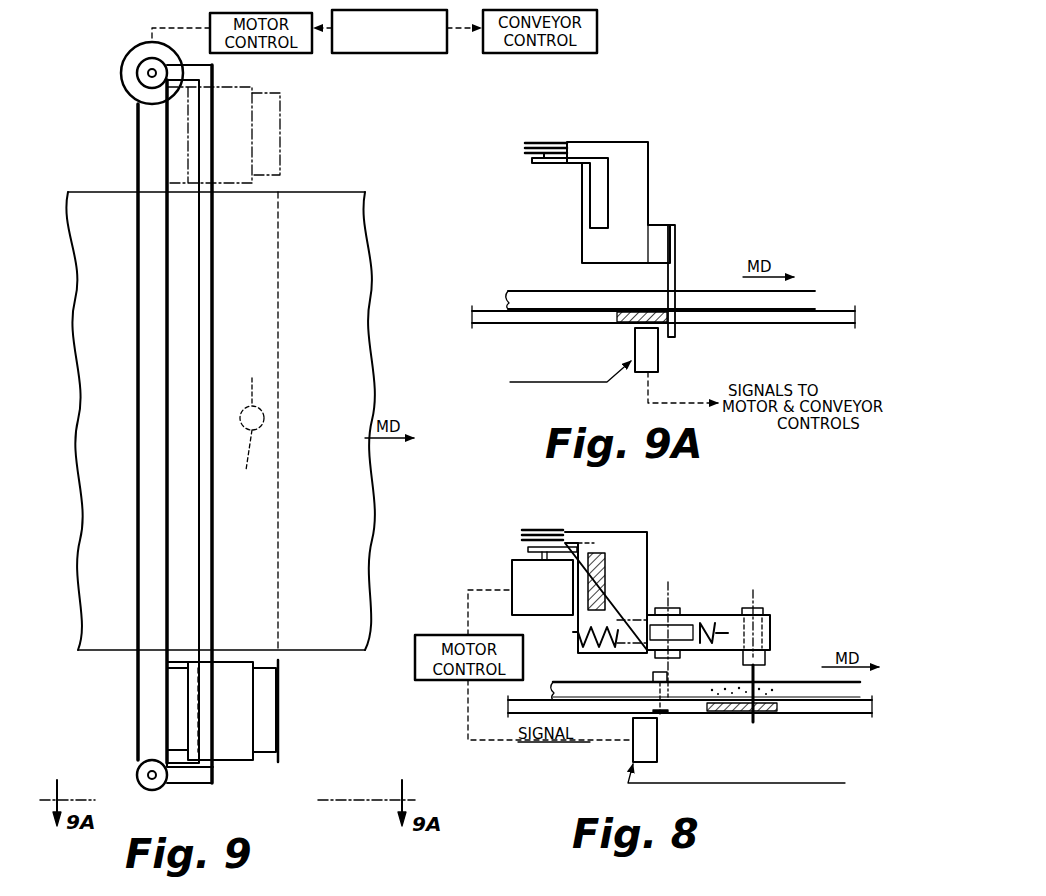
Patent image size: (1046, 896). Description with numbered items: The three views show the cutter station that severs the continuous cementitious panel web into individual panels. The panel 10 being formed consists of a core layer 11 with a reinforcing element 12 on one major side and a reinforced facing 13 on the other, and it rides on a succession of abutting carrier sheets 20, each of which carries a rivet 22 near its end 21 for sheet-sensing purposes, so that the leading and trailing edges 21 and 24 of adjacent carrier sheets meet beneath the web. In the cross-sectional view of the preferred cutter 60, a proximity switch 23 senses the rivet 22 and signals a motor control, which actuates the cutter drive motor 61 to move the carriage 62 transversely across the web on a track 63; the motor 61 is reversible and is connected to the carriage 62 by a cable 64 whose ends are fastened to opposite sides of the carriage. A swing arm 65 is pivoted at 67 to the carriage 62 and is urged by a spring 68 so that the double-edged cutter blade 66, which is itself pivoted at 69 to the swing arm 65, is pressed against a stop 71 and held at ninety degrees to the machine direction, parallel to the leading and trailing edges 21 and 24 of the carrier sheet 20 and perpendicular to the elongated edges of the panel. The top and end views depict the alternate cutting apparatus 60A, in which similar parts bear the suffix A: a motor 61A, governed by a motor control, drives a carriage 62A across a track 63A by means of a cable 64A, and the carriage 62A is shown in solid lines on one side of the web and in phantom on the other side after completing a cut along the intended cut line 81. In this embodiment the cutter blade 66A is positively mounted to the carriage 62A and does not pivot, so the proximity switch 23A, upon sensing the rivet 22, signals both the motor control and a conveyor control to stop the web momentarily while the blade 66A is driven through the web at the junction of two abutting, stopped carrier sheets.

In FIG. 9A, the panel 10 is at (508, 294).
In FIG. 8, the panel 10 is at (548, 688).
In FIG. 9A, the core layer 11 is at (798, 316).
In FIG. 8, the core layer 11 is at (853, 690).
In FIG. 9A, the reinforcing element 12 is at (818, 325).
In FIG. 8, the reinforcing element 12 is at (830, 702).
In FIG. 9A, the reinforced facing 13 is at (818, 292).
In FIG. 8, the reinforced facing 13 is at (808, 681).
In FIG. 9A, the carrier sheet 20 is at (476, 325).
In FIG. 8, the carrier sheet 20 is at (512, 708).
In FIG. 9A, the end of carrier sheet 21 is at (661, 336).
In FIG. 8, the end of carrier sheet 21 is at (750, 722).
In FIG. 9, the rivet 22 is at (248, 483).
In FIG. 9A, the rivet 22 is at (660, 310).
In FIG. 8, the rivet 22 is at (721, 714).
In FIG. 8, the proximity switch 23 is at (637, 750).
In FIG. 9, the proximity switch 23A is at (392, 54).
In FIG. 9A, the proximity switch 23A is at (640, 372).
In FIG. 9A, the trailing edge 24 is at (683, 325).
In FIG. 8, the trailing edge 24 is at (761, 714).
In FIG. 8, the cutter 60 is at (739, 536).
In FIG. 9, the cutting apparatus 60A is at (243, 790).
In FIG. 9A, the cutting apparatus 60A is at (737, 139).
In FIG. 8, the cutter drive motor 61 is at (512, 578).
In FIG. 9, the motor 61A is at (130, 78).
In FIG. 8, the carriage 62 is at (632, 550).
In FIG. 9, the carriage 62A is at (240, 85).
In FIG. 9A, the carriage 62A is at (636, 186).
In FIG. 8, the track 63 is at (604, 580).
In FIG. 9, the track 63A is at (212, 312).
In FIG. 9A, the track 63A is at (607, 187).
In FIG. 8, the cable 64 is at (549, 545).
In FIG. 9, the drive belt 64A is at (165, 445).
In FIG. 9A, the drive belt 64A is at (548, 142).
In FIG. 8, the swing arm 65 is at (718, 615).
In FIG. 8, the cutter blade 66 is at (758, 680).
In FIG. 9, the cutter blade 66A is at (282, 160).
In FIG. 9A, the cutter blade 66A is at (678, 277).
In FIG. 8, the pivot 67 is at (670, 606).
In FIG. 8, the spring 68 is at (612, 642).
In FIG. 8, the pivot 69 is at (758, 610).
In FIG. 8, the stop 71 is at (668, 676).
In FIG. 9, the intended cut line 81 is at (278, 505).